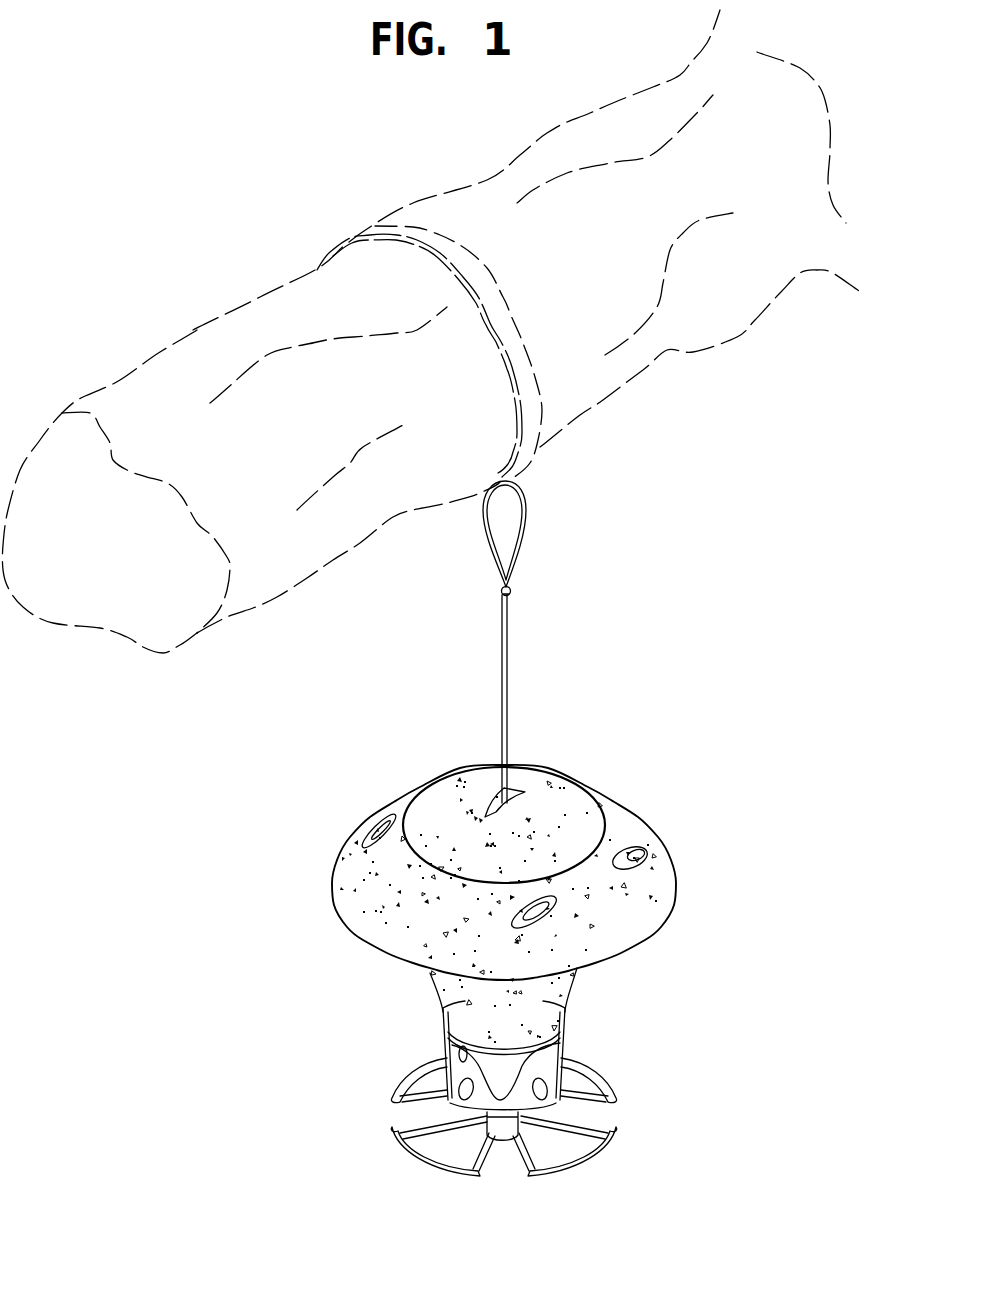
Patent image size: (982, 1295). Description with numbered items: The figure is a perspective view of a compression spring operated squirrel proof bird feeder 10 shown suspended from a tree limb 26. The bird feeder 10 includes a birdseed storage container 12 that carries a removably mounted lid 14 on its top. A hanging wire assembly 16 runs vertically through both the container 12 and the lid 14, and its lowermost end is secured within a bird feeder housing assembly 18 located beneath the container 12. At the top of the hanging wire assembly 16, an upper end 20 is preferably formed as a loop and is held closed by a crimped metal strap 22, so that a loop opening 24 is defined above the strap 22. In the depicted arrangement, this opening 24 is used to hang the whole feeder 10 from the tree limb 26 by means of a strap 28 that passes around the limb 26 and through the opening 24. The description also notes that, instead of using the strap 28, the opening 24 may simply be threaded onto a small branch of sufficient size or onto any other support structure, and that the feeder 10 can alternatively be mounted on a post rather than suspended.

The compression spring operated squirrel proof bird feeder 10 is at (314, 971).
The birdseed storage container 12 is at (657, 885).
The removably mounted lid 14 is at (583, 803).
The hanging wire assembly 16 is at (519, 684).
The bird feeder housing assembly 18 is at (588, 1034).
The upper end 20 is at (524, 513).
The crimped metal strap 22 is at (511, 588).
The loop opening 24 is at (497, 530).
The tree limb 26 is at (584, 274).
The strap 28 is at (377, 233).